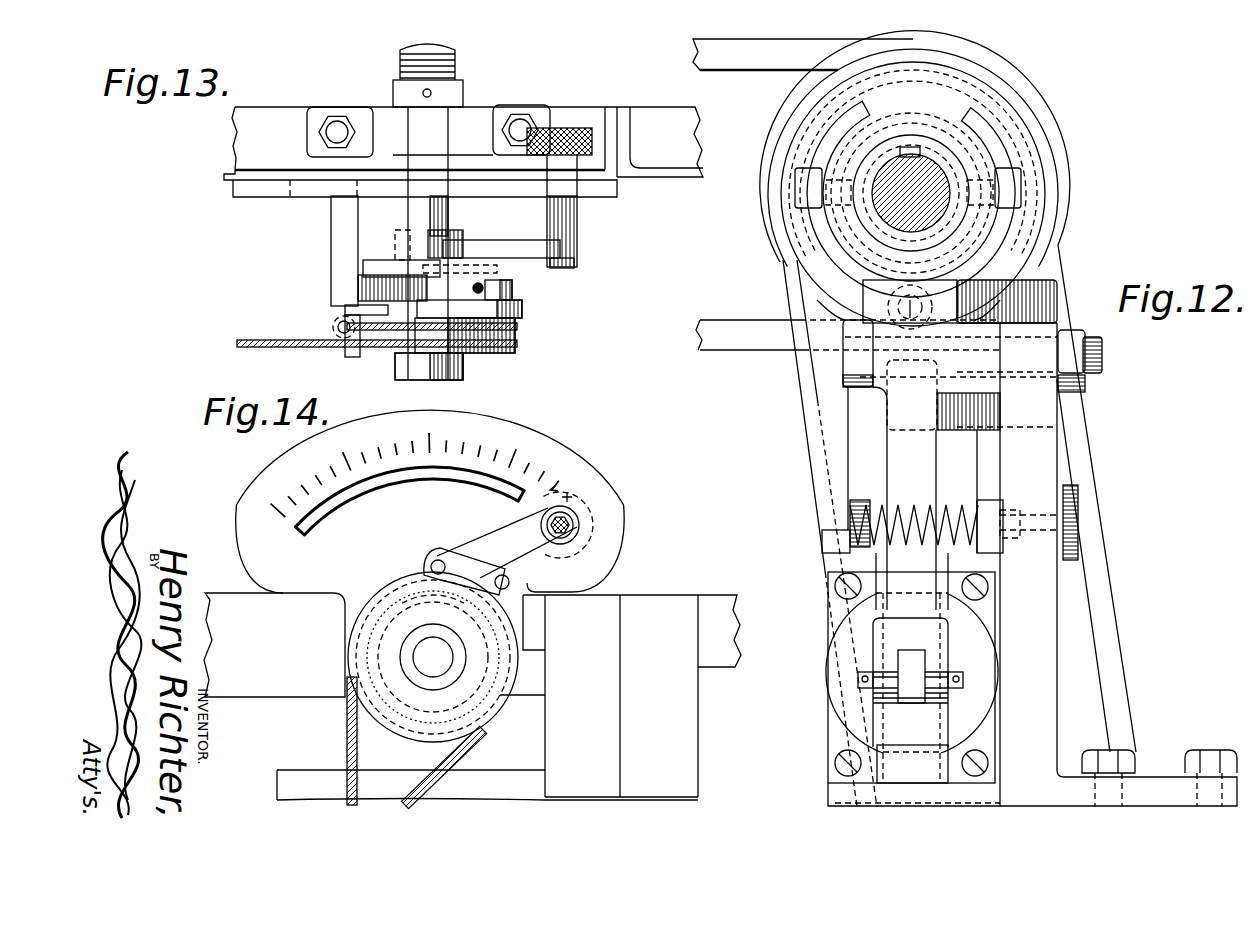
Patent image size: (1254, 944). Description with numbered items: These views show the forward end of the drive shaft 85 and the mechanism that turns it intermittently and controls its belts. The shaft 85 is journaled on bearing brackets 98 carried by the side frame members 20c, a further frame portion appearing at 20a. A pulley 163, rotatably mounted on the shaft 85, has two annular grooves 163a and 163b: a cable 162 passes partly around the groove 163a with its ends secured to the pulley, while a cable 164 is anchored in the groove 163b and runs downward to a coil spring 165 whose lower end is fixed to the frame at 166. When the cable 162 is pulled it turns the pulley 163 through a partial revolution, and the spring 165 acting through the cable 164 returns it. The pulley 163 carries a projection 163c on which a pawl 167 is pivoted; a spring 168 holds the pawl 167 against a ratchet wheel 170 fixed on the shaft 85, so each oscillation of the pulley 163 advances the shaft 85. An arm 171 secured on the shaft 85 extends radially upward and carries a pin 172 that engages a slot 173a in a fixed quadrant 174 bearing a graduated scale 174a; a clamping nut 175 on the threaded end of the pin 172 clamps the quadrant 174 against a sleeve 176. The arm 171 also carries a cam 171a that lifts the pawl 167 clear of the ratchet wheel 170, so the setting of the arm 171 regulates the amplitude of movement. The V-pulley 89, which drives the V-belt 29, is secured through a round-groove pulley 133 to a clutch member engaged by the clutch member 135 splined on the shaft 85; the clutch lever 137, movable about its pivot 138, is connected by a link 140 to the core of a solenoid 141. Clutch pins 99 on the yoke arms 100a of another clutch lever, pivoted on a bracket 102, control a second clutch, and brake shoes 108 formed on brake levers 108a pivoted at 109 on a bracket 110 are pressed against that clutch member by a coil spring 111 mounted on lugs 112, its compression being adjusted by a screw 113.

In FIG. 13, the drive shaft 85 is at (398, 52).
In FIG. 14, the drive shaft 85 is at (442, 667).
In FIG. 12, the drive shaft 85 is at (900, 170).
In FIG. 13, the bearing brackets 98 is at (478, 113).
In FIG. 13, the clamping nut 175 is at (560, 127).
In FIG. 14, the clamping nut 175 is at (595, 527).
In FIG. 13, the side frame members 20c is at (235, 160).
In FIG. 13, the quadrant 174 is at (258, 190).
In FIG. 14, the quadrant 174 is at (503, 430).
In FIG. 13, the spring attachment point 166 is at (331, 231).
In FIG. 13, the cam 171a is at (376, 258).
In FIG. 14, the cam 171a is at (372, 637).
In FIG. 13, the pawl 167 is at (493, 264).
In FIG. 14, the pawl 167 is at (447, 548).
In FIG. 13, the sleeve 176 is at (578, 212).
In FIG. 13, the pin 172 is at (577, 244).
In FIG. 14, the pin 172 is at (575, 519).
In FIG. 13, the ratchet wheel 170 is at (358, 287).
In FIG. 14, the ratchet wheel 170 is at (390, 605).
In FIG. 13, the spring 168 is at (473, 290).
In FIG. 14, the spring 168 is at (500, 574).
In FIG. 13, the arm 171 is at (532, 260).
In FIG. 14, the arm 171 is at (578, 540).
In FIG. 13, the projection 163c is at (524, 311).
In FIG. 14, the projection 163c is at (470, 550).
In FIG. 13, the coil spring 165 is at (337, 325).
In FIG. 13, the cable 164 is at (522, 330).
In FIG. 14, the cable 164 is at (347, 712).
In FIG. 13, the cable 162 is at (270, 348).
In FIG. 14, the cable 162 is at (455, 760).
In FIG. 13, the annular groove 163a is at (366, 352).
In FIG. 13, the pulley 163 is at (465, 360).
In FIG. 14, the pulley 163 is at (515, 675).
In FIG. 13, the annular groove 163b is at (396, 332).
In FIG. 14, the slot 173a is at (522, 490).
In FIG. 14, the graduated scale 174a is at (556, 485).
In FIG. 14, the frame portion 20a is at (680, 770).
In FIG. 12, the brake shoes 108 is at (835, 122).
In FIG. 12, the clutch member 135 is at (940, 108).
In FIG. 12, the clutch pins 99 is at (995, 176).
In FIG. 12, the yoke arms 100a is at (1022, 178).
In FIG. 12, the round-groove pulley 133 is at (787, 158).
In FIG. 12, the V-pulley 89 is at (762, 225).
In FIG. 12, the V-belt 29 is at (728, 325).
In FIG. 12, the pivot 109 is at (905, 335).
In FIG. 12, the brake levers 108a is at (837, 413).
In FIG. 12, the clutch lever 137 is at (895, 443).
In FIG. 12, the bracket 110 is at (958, 430).
In FIG. 12, the lugs 112 is at (845, 490).
In FIG. 12, the coil spring 111 is at (900, 505).
In FIG. 12, the pivot 138 is at (1103, 355).
In FIG. 12, the screw 113 is at (1080, 545).
In FIG. 12, the solenoid 141 is at (833, 708).
In FIG. 12, the link 140 is at (912, 703).
In FIG. 12, the bracket 102 is at (1043, 708).